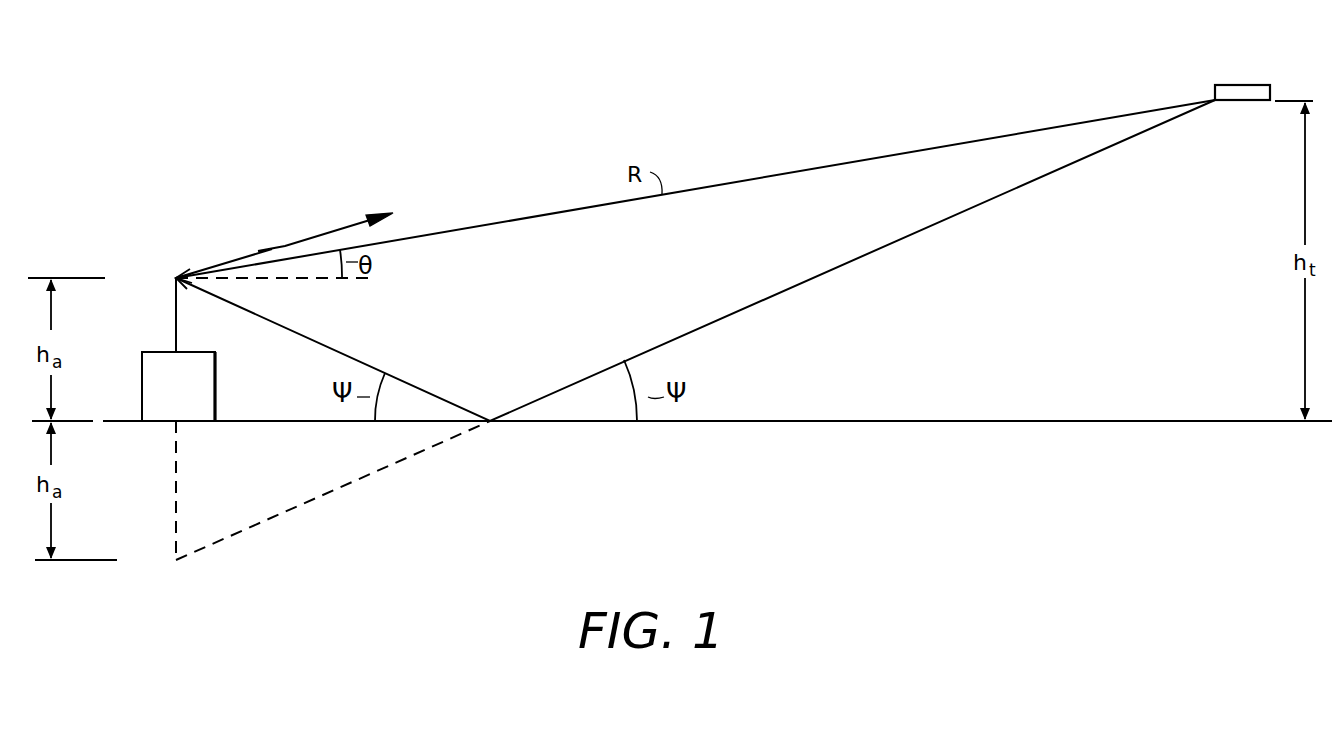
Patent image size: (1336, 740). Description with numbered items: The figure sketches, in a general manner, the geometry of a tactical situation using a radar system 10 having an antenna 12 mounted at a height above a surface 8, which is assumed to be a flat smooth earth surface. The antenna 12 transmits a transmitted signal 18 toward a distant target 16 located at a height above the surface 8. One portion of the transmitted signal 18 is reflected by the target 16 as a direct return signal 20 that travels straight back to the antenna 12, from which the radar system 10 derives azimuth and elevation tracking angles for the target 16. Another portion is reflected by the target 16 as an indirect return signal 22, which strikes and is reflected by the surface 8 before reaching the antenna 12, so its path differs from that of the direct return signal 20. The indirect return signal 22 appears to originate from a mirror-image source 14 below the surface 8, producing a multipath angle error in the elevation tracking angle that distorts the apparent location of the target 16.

The surface 8 is at (928, 420).
The radar system 10 is at (142, 352).
The antenna 12 is at (172, 275).
The image of antenna 14 is at (162, 558).
The target 16 is at (1232, 85).
The transmitted signal 18 is at (322, 233).
The direct return signal 20 is at (794, 172).
The indirect return signal 22 is at (352, 359).